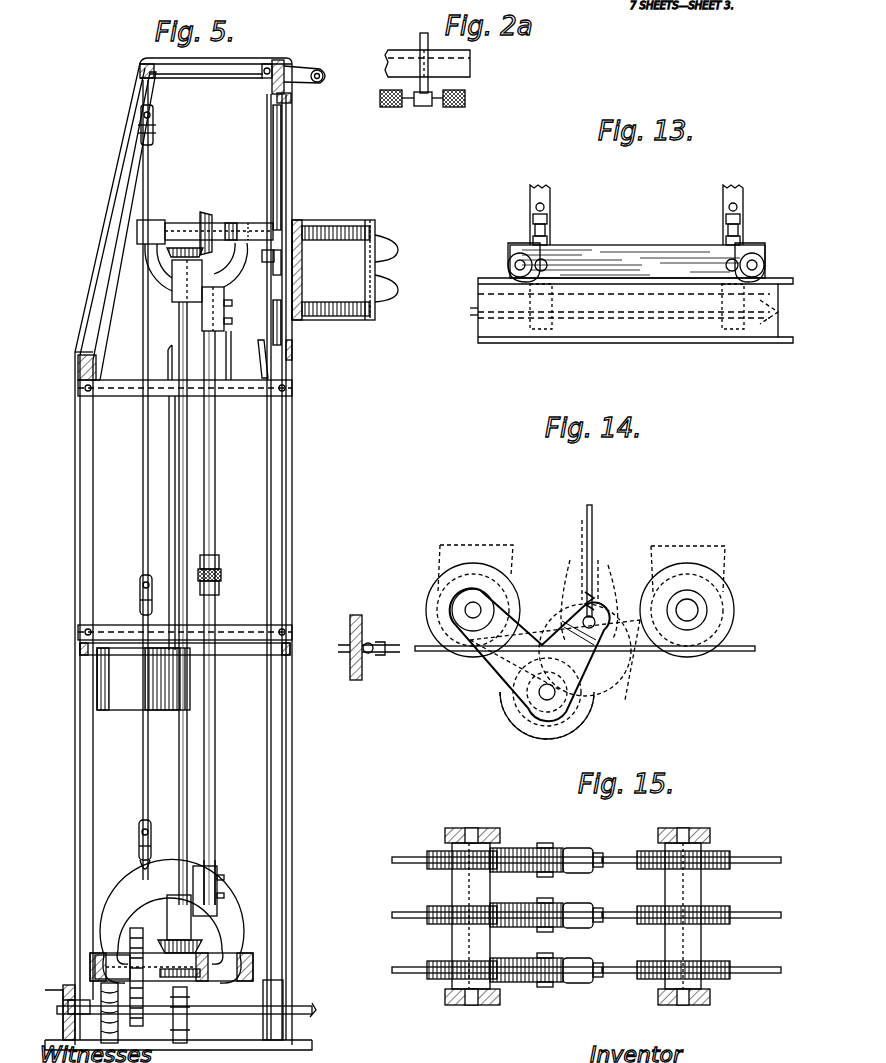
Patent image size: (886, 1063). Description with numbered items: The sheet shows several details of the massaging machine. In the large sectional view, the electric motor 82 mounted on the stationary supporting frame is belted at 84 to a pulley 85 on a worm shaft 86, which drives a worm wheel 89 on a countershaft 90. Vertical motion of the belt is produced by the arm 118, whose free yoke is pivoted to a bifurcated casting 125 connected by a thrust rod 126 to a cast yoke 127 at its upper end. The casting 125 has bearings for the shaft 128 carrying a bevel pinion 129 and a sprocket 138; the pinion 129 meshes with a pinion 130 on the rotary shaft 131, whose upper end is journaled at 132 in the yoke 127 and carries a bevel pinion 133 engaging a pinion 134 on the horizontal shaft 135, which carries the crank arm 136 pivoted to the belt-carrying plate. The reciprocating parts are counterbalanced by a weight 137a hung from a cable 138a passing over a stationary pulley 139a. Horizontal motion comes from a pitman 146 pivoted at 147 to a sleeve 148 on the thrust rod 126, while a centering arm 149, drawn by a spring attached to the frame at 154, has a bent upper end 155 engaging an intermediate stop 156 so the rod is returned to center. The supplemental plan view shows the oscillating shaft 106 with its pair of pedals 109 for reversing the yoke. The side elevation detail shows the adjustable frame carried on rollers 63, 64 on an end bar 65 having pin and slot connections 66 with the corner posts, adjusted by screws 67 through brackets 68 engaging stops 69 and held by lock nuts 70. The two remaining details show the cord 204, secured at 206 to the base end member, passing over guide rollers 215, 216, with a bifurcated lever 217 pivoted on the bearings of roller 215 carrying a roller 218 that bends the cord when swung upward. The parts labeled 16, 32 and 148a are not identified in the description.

In FIG. 5, the motor 16 is at (378, 235).
In FIG. 5, the motor housing 32 is at (338, 220).
In FIG. 13, the roller 63 is at (508, 267).
In FIG. 13, the roller 64 is at (765, 267).
In FIG. 13, the adjustable end bar 65 is at (632, 248).
In FIG. 13, the pin and slot connection 66 is at (546, 262).
In FIG. 13, the screw 67 is at (550, 212).
In FIG. 13, the bracket 68 is at (548, 222).
In FIG. 13, the stop 69 is at (533, 248).
In FIG. 13, the lock nut 70 is at (548, 232).
In FIG. 5, the electric motor 82 is at (214, 850).
In FIG. 5, the belt 84 is at (218, 886).
In FIG. 5, the pulley 85 is at (95, 966).
In FIG. 5, the worm shaft 86 is at (143, 992).
In FIG. 5, the worm wheel 89 is at (118, 1030).
In FIG. 5, the countershaft 90 is at (302, 1012).
In FIG. 2A, the oscillating shaft 106 is at (420, 42).
In FIG. 2A, the pedal 109 is at (392, 108).
In FIG. 5, the arm 118 is at (90, 959).
In FIG. 5, the bifurcated casting 125 is at (242, 926).
In FIG. 5, the thrust rod 126 is at (216, 514).
In FIG. 5, the cast yoke 127 is at (145, 256).
In FIG. 5, the shaft 128 is at (186, 982).
In FIG. 5, the bevel pinion 129 is at (192, 978).
In FIG. 5, the bevel pinion 130 is at (172, 895).
In FIG. 5, the rotary shaft 131 is at (188, 773).
In FIG. 5, the journal 132 is at (182, 292).
In FIG. 5, the bevel pinion 133 is at (172, 262).
In FIG. 5, the bevel pinion 134 is at (212, 214).
In FIG. 5, the horizontal shaft 135 is at (186, 224).
In FIG. 5, the crank arm 136 is at (266, 262).
In FIG. 5, the weight 137a is at (124, 700).
In FIG. 5, the sprocket 138 is at (158, 945).
In FIG. 5, the cable 138a is at (143, 582).
In FIG. 5, the stationary pulley 139a is at (155, 127).
In FIG. 5, the pitman 146 is at (223, 583).
In FIG. 5, the pivot 147 is at (223, 576).
In FIG. 5, the sleeve 148 is at (220, 561).
In FIG. 5, the turnbuckle 148a is at (138, 832).
In FIG. 5, the arm 149 is at (170, 512).
In FIG. 5, the spring attachment 154 is at (117, 388).
In FIG. 5, the bent upper end 155 is at (233, 343).
In FIG. 5, the intermediate stop 156 is at (258, 365).
In FIG. 14, the wire or cable 204 is at (742, 653).
In FIG. 15, the wire or cable 204 is at (625, 967).
In FIG. 14, the cable securing point 206 is at (345, 650).
In FIG. 14, the guide roller 215 is at (515, 588).
In FIG. 15, the guide roller 215 is at (435, 852).
In FIG. 14, the guide roller 216 is at (730, 600).
In FIG. 15, the guide roller 216 is at (722, 855).
In FIG. 14, the bifurcated lever 217 is at (495, 660).
In FIG. 15, the bifurcated lever 217 is at (518, 848).
In FIG. 14, the roller 218 is at (540, 722).
In FIG. 15, the roller 218 is at (567, 848).